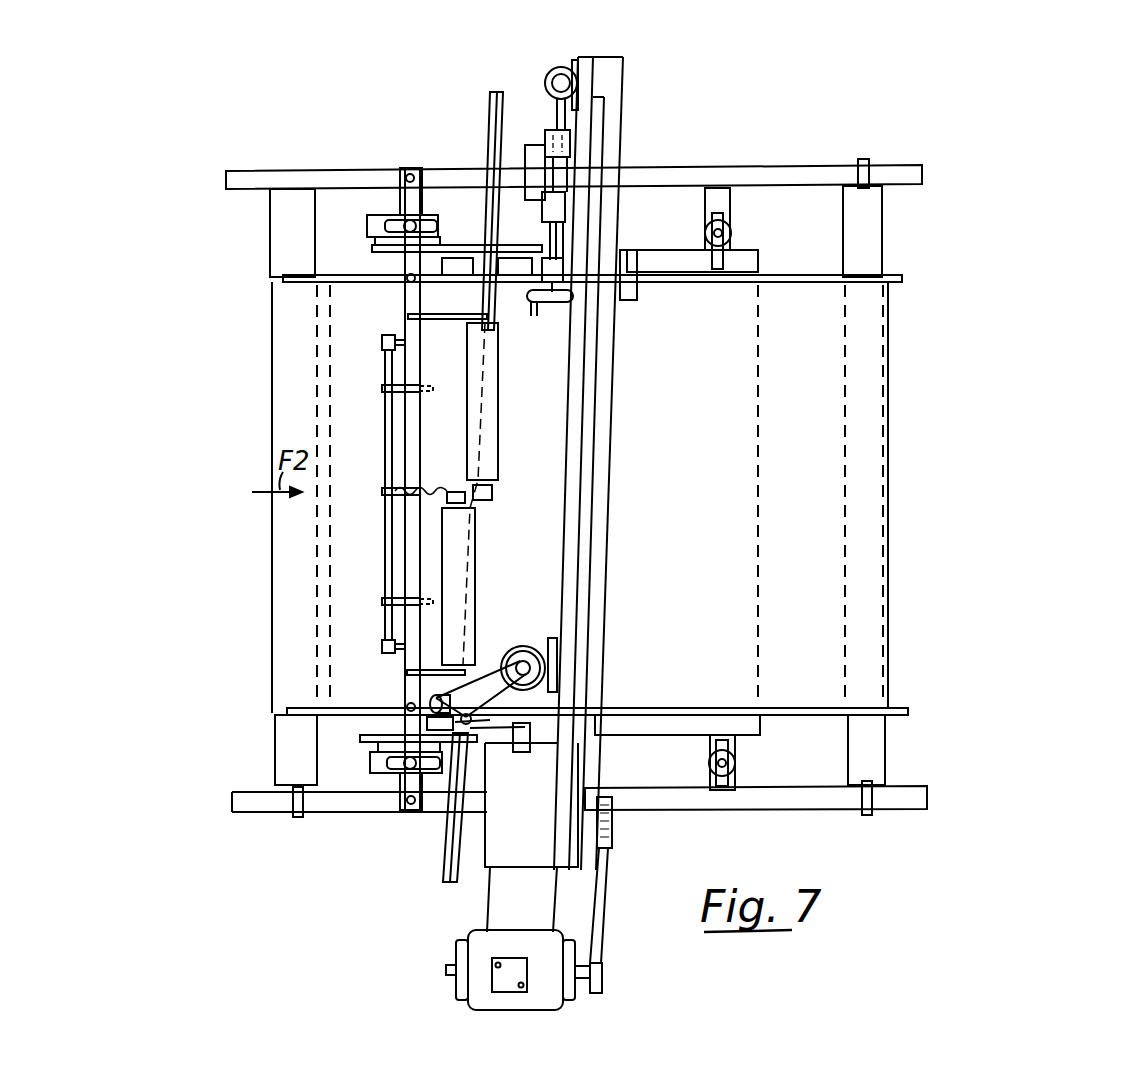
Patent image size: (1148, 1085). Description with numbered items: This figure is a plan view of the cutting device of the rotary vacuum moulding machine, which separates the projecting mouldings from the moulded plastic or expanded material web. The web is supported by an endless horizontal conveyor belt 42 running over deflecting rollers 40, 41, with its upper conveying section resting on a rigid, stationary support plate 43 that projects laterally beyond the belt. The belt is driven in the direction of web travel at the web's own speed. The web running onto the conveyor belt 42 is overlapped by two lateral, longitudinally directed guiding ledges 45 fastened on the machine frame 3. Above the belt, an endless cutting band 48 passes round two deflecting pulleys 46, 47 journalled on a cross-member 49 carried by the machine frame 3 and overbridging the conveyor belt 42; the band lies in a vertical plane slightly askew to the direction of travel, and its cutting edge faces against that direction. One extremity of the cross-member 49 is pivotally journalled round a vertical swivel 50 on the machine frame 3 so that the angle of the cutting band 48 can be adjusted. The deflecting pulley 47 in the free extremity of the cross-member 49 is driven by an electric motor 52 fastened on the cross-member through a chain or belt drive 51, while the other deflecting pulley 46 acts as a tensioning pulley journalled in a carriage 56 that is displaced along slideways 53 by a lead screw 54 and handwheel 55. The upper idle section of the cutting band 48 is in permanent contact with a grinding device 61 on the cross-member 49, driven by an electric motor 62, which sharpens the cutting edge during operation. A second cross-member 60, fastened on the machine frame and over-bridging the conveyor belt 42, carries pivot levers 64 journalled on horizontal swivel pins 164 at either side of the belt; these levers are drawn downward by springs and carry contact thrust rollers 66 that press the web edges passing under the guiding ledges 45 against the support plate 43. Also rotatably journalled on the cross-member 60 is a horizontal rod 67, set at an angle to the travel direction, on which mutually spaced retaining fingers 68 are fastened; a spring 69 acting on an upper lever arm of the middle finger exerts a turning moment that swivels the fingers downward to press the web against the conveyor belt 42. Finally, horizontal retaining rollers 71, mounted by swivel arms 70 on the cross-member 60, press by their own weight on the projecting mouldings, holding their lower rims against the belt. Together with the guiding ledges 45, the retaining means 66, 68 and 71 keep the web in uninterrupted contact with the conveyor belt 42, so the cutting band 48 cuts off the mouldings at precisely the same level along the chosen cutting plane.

The machine frame 3 is at (781, 173).
The deflecting roller 40 is at (279, 222).
The deflecting roller 41 is at (853, 213).
The conveyor belt 42 is at (602, 495).
The support plate 43 is at (753, 735).
The guiding ledges 45 is at (809, 281).
The deflecting pulley 46 is at (491, 118).
The deflecting pulley 47 is at (443, 845).
The cutting band 48 is at (488, 383).
The cross-member 49 is at (598, 415).
The vertical swivel 50 is at (560, 68).
The chain or belt drive 51 is at (607, 891).
The electric motor 52 is at (546, 1010).
The slideways 53 is at (557, 108).
The lead screw 54 is at (549, 233).
The handwheel 55 is at (554, 301).
The carriage 56 is at (534, 155).
The cross-member 60 is at (413, 552).
The grinding device 61 is at (497, 652).
The electric motor 62 is at (525, 647).
The pivot levers 64 is at (446, 246).
The contact thrust rollers 66 is at (465, 271).
The horizontal rod 67 is at (385, 432).
The retaining fingers 68 is at (425, 389).
The spring 69 is at (410, 495).
The swivel arms 70 is at (446, 319).
The retaining rollers 71 is at (498, 413).
The horizontal swivel pins 164 is at (372, 218).